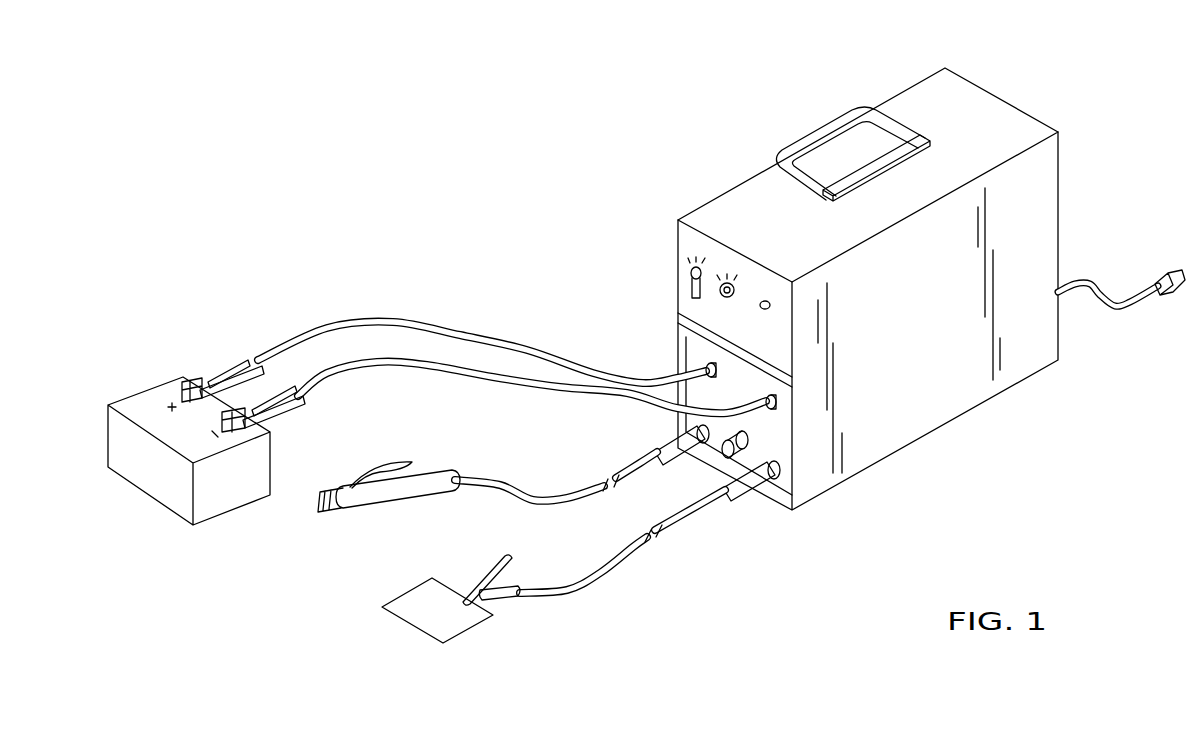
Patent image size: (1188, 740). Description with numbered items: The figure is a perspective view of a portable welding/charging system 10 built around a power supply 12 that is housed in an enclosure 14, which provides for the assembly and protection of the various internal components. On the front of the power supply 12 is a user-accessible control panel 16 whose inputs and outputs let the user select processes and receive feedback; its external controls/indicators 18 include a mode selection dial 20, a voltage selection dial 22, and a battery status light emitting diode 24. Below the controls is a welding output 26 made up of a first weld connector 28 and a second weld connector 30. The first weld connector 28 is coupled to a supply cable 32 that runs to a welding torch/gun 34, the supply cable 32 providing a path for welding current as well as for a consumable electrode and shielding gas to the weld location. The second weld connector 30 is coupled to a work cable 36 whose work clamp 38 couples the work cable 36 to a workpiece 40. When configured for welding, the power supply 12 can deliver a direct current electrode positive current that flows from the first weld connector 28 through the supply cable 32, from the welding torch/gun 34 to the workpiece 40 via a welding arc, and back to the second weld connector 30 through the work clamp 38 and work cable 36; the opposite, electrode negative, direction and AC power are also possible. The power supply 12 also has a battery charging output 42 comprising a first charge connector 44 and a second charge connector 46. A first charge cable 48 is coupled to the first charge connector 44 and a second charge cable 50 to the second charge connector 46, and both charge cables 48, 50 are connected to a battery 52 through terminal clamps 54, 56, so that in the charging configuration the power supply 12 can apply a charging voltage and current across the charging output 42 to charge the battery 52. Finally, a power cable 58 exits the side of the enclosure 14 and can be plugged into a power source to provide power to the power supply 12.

The portable welding/charging system 10 is at (626, 108).
The power supply 12 is at (770, 176).
The enclosure 14 is at (988, 105).
The control panel 16 is at (778, 333).
The external controls/indicators 18 is at (668, 282).
The mode selection dial 20 is at (690, 268).
The voltage selection dial 22 is at (727, 283).
The battery status light emitting diode 24 is at (765, 300).
The welding output 26 is at (762, 515).
The first weld connector 28 is at (708, 462).
The second weld connector 30 is at (782, 467).
The supply cable 32 is at (572, 492).
The welding torch/gun 34 is at (382, 500).
The work cable 36 is at (608, 576).
The work clamp 38 is at (472, 586).
The workpiece 40 is at (405, 627).
The battery charging output 42 is at (674, 374).
The first charge connector 44 is at (678, 366).
The second charge connector 46 is at (790, 398).
The first charge cable 48 is at (388, 322).
The second charge cable 50 is at (420, 378).
The battery 52 is at (147, 382).
The terminal clamp 54 is at (213, 370).
The terminal clamp 56 is at (275, 412).
The power cable 58 is at (1088, 283).